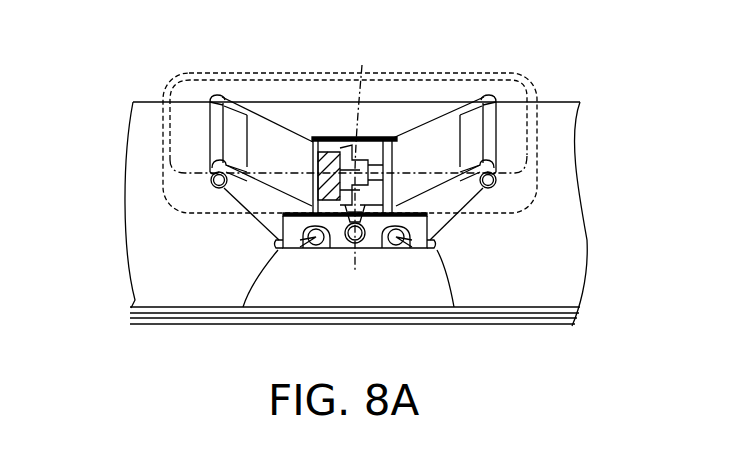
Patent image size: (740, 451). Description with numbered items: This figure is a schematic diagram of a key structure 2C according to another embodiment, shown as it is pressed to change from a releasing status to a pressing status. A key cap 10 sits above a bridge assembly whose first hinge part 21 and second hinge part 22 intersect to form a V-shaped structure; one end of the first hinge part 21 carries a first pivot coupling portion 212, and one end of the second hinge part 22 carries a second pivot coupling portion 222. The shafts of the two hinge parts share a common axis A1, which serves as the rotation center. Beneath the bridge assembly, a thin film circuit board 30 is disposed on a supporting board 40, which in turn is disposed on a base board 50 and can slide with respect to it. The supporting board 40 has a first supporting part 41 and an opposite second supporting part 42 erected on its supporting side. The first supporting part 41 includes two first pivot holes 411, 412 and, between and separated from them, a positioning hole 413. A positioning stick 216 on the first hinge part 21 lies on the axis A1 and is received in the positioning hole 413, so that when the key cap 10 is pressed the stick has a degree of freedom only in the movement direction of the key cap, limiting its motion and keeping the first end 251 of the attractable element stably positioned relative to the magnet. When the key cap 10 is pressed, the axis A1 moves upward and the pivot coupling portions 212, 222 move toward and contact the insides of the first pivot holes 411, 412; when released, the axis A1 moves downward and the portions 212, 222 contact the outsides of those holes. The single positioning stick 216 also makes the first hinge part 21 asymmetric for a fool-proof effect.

The key structure 2C is at (116, 63).
The key cap 10 is at (513, 82).
The first hinge part 21 is at (267, 128).
The second hinge part 22 is at (445, 132).
The first pivot coupling portion 212 is at (294, 114).
The positioning stick 216 is at (381, 137).
The second pivot coupling portion 222 is at (397, 212).
The first end 251 is at (323, 138).
The second supporting part 42 is at (344, 125).
The axis A1 is at (362, 157).
The positioning hole 413 is at (392, 140).
The first supporting part 41 is at (430, 222).
The first pivot hole 411 is at (243, 307).
The first pivot hole 412 is at (454, 307).
The thin film circuit board 30 is at (570, 290).
The supporting board 40 is at (578, 313).
The base board 50 is at (555, 324).